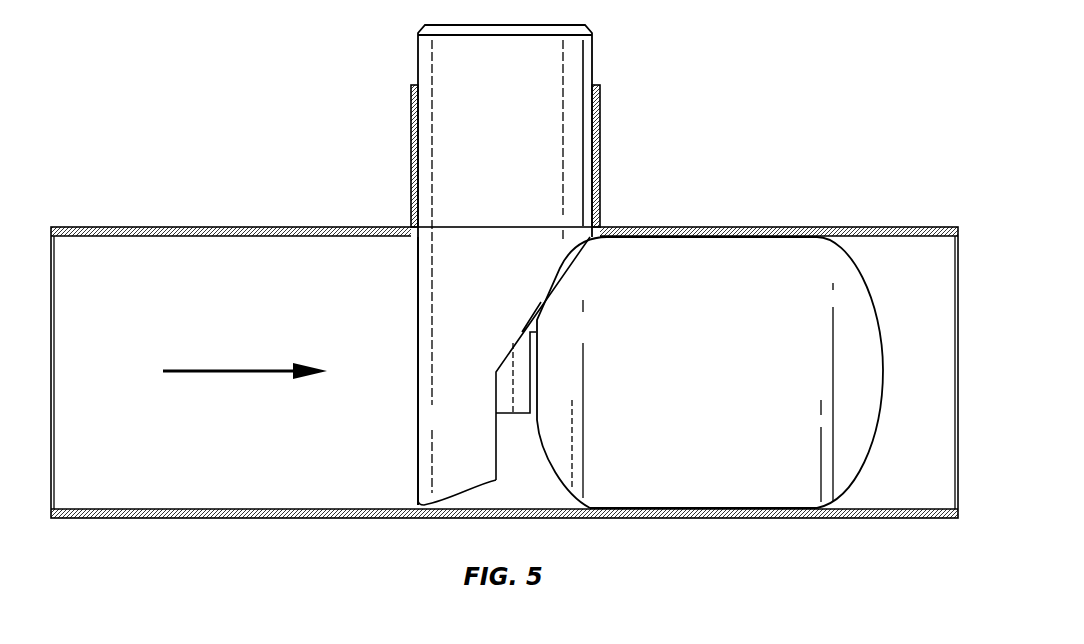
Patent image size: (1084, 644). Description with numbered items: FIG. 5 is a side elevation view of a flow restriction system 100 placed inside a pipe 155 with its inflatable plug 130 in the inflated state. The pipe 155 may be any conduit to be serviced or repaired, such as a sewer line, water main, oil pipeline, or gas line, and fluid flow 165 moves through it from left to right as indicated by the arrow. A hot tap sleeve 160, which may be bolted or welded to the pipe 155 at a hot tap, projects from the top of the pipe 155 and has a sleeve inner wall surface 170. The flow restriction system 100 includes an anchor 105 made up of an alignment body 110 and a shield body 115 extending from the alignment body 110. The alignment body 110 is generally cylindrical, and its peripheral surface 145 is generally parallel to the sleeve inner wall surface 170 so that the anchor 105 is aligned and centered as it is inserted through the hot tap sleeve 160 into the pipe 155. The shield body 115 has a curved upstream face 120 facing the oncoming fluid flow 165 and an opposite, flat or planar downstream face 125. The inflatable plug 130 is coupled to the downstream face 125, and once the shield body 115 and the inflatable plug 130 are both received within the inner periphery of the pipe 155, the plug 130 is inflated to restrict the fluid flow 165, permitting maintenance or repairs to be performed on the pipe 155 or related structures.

The flow restriction system 100 is at (752, 108).
The anchor 105 is at (572, 70).
The alignment body 110 is at (430, 65).
The shield body 115 is at (447, 463).
The upstream face 120 is at (417, 313).
The downstream face 125 is at (500, 447).
The inflatable plug 130 is at (783, 287).
The peripheral surface 145 is at (491, 181).
The pipe 155 is at (118, 518).
The hot tap sleeve 160 is at (600, 167).
The fluid flow 165 is at (218, 367).
The sleeve inner wall surface 170 is at (420, 117).